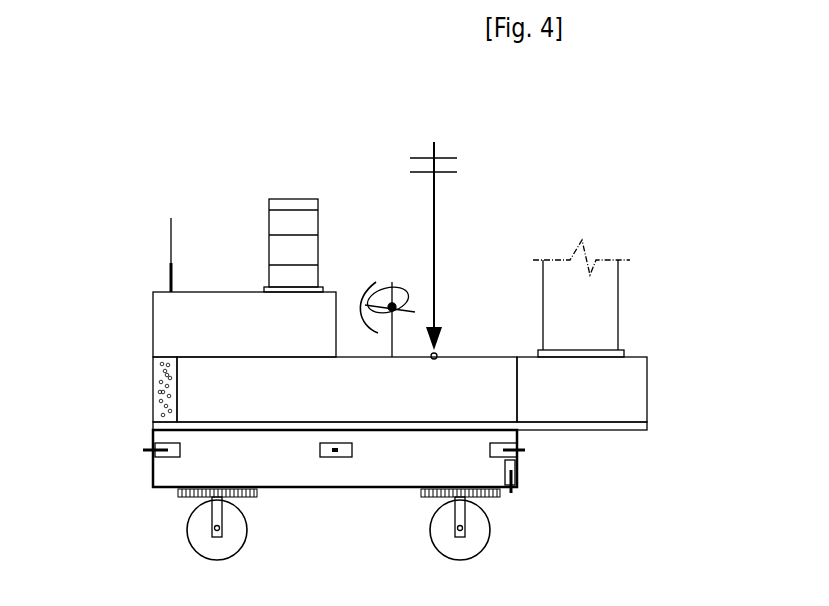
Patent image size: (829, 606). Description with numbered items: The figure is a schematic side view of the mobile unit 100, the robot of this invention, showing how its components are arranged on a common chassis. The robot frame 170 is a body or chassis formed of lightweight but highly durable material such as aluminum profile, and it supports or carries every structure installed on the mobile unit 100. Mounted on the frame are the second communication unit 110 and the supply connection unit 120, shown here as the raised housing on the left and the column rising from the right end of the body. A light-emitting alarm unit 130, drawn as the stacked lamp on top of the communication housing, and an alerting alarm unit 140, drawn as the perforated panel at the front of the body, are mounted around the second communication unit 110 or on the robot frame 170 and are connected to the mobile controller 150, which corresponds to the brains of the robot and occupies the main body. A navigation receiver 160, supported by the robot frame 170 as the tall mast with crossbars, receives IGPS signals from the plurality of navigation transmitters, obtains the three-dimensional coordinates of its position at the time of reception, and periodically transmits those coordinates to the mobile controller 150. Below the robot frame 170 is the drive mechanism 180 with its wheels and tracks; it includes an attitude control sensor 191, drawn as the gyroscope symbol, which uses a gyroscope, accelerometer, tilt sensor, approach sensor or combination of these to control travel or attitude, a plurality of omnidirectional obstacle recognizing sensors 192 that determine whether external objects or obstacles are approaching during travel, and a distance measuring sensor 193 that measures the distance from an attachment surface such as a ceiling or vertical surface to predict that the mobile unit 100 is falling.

The mobile unit 100 is at (568, 184).
The second communication unit 110 is at (172, 318).
The supply connection unit 120 is at (638, 388).
The light-emitting alarm unit 130 is at (285, 198).
The alerting alarm unit 140 is at (158, 386).
The mobile controller 150 is at (288, 407).
The navigation receiver 160 is at (437, 247).
The robot frame 170 is at (648, 423).
The drive mechanism 180 is at (165, 472).
The attitude control sensor 191 is at (368, 285).
The omnidirectional obstacle recognizing sensors 192 is at (143, 450).
The distance measuring sensor 193 is at (513, 495).